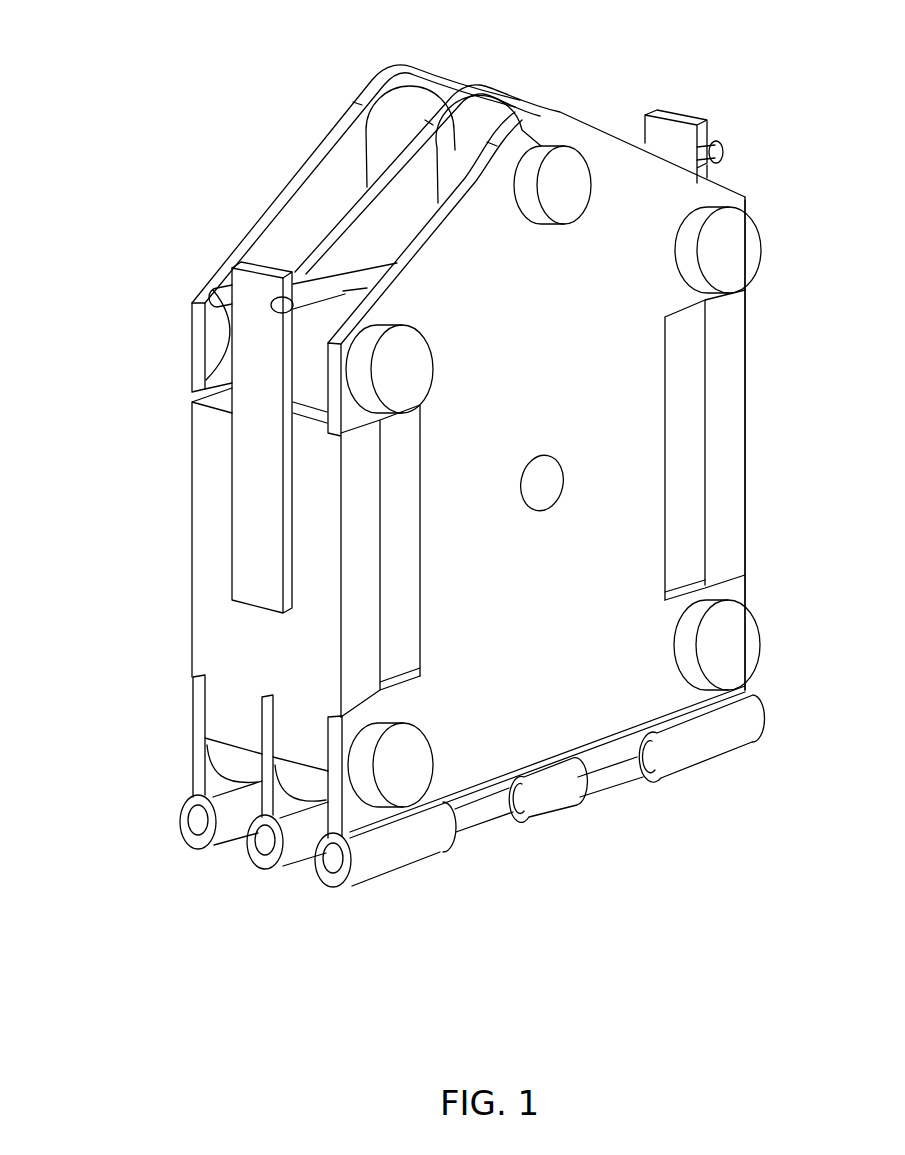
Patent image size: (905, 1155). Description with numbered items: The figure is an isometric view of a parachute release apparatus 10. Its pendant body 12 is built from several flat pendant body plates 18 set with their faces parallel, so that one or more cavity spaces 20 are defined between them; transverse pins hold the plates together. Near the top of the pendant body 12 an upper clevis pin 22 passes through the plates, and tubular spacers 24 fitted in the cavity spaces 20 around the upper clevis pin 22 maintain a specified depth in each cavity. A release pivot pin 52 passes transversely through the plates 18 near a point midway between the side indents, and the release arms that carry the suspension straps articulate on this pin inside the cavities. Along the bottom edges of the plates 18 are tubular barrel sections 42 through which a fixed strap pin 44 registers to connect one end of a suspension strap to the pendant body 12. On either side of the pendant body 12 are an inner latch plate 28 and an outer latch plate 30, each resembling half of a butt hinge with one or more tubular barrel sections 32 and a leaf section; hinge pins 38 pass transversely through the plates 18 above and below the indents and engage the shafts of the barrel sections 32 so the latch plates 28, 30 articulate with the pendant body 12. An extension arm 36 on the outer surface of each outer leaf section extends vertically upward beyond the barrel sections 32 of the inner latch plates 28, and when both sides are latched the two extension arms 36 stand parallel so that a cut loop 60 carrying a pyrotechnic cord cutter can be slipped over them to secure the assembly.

The parachute release apparatus 10 is at (795, 239).
The pendant body 12 is at (238, 225).
The pendant body plate 18 is at (517, 678).
The cavity space 20 is at (406, 222).
The upper clevis pin 22 is at (567, 183).
The tubular spacer 24 is at (402, 110).
The inner latch plate 28 is at (688, 502).
The outer latch plate 30 is at (728, 528).
The barrel section 32 is at (220, 340).
The extension arm 36 is at (250, 431).
The hinge pin 38 is at (730, 255).
The barrel section 42 is at (718, 740).
The strap pin 44 is at (603, 763).
The release pivot pin 52 is at (548, 488).
The cut loop 60 is at (250, 303).